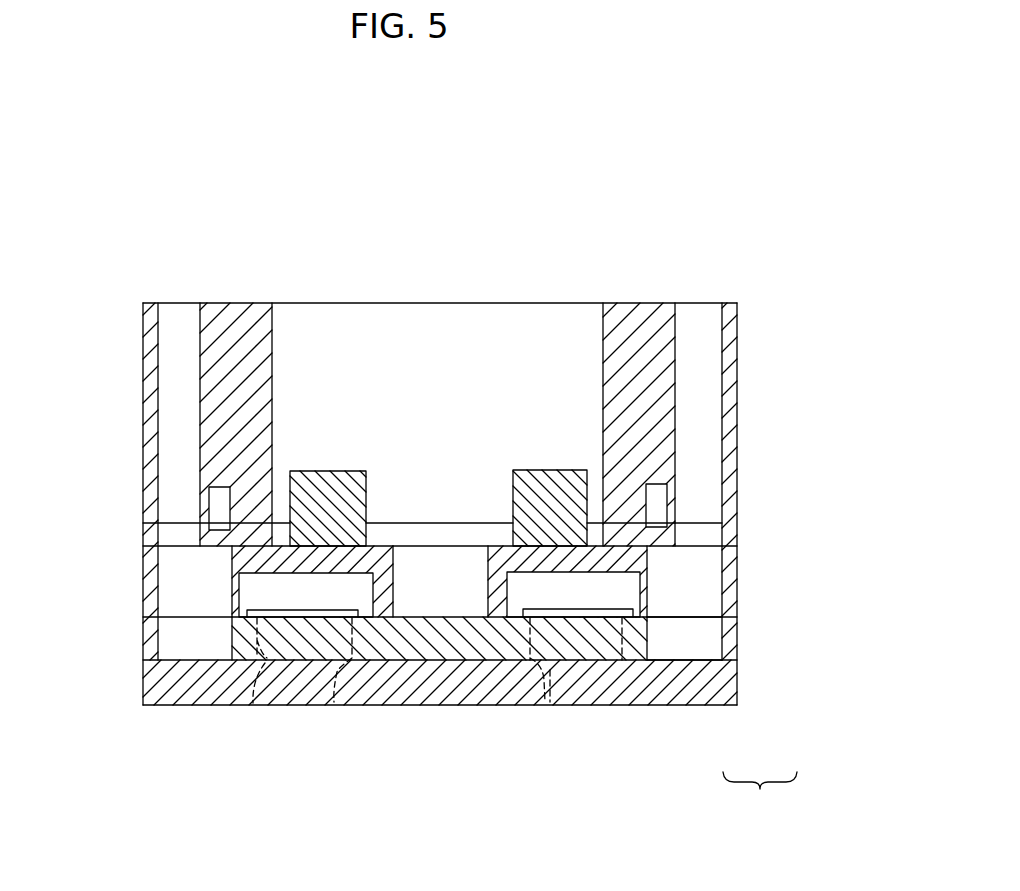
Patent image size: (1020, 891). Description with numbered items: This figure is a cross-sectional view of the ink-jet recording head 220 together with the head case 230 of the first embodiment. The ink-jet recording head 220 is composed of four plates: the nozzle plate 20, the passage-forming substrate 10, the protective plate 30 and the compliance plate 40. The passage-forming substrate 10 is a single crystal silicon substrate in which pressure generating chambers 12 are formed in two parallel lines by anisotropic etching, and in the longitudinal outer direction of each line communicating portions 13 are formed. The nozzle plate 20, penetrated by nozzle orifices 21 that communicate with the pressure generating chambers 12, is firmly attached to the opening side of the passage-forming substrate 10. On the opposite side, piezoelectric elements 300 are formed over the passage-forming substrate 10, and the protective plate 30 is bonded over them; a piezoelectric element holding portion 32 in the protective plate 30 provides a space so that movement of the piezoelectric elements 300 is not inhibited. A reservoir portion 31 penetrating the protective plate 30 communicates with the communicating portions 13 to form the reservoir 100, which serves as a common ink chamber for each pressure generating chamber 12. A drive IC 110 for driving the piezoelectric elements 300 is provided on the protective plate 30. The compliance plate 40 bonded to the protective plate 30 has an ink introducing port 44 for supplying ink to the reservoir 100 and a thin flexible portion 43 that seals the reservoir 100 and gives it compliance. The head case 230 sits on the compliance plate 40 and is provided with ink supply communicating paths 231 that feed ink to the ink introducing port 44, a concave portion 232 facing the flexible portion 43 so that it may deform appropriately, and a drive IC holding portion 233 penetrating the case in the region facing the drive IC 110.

The reservoir 100 is at (760, 793).
The passage-forming substrate 10 is at (152, 628).
The pressure generating chamber 12 is at (253, 707).
The communicating portion 13 is at (695, 640).
The nozzle plate 20 is at (155, 682).
The nozzle orifice 21 is at (337, 707).
The protective plate 30 is at (152, 576).
The reservoir portion 31 is at (707, 602).
The piezoelectric element holding portion 32 is at (508, 594).
The compliance plate 40 is at (148, 534).
The flexible portion 43 is at (222, 525).
The ink introducing port 44 is at (722, 527).
The drive IC 110 is at (326, 487).
The ink-jet recording head 220 is at (770, 519).
The head case 230 is at (640, 325).
The ink supply communicating path 231 is at (722, 327).
The concave portion 232 is at (669, 497).
The drive IC holding portion 233 is at (600, 342).
The piezoelectric element 300 is at (583, 607).